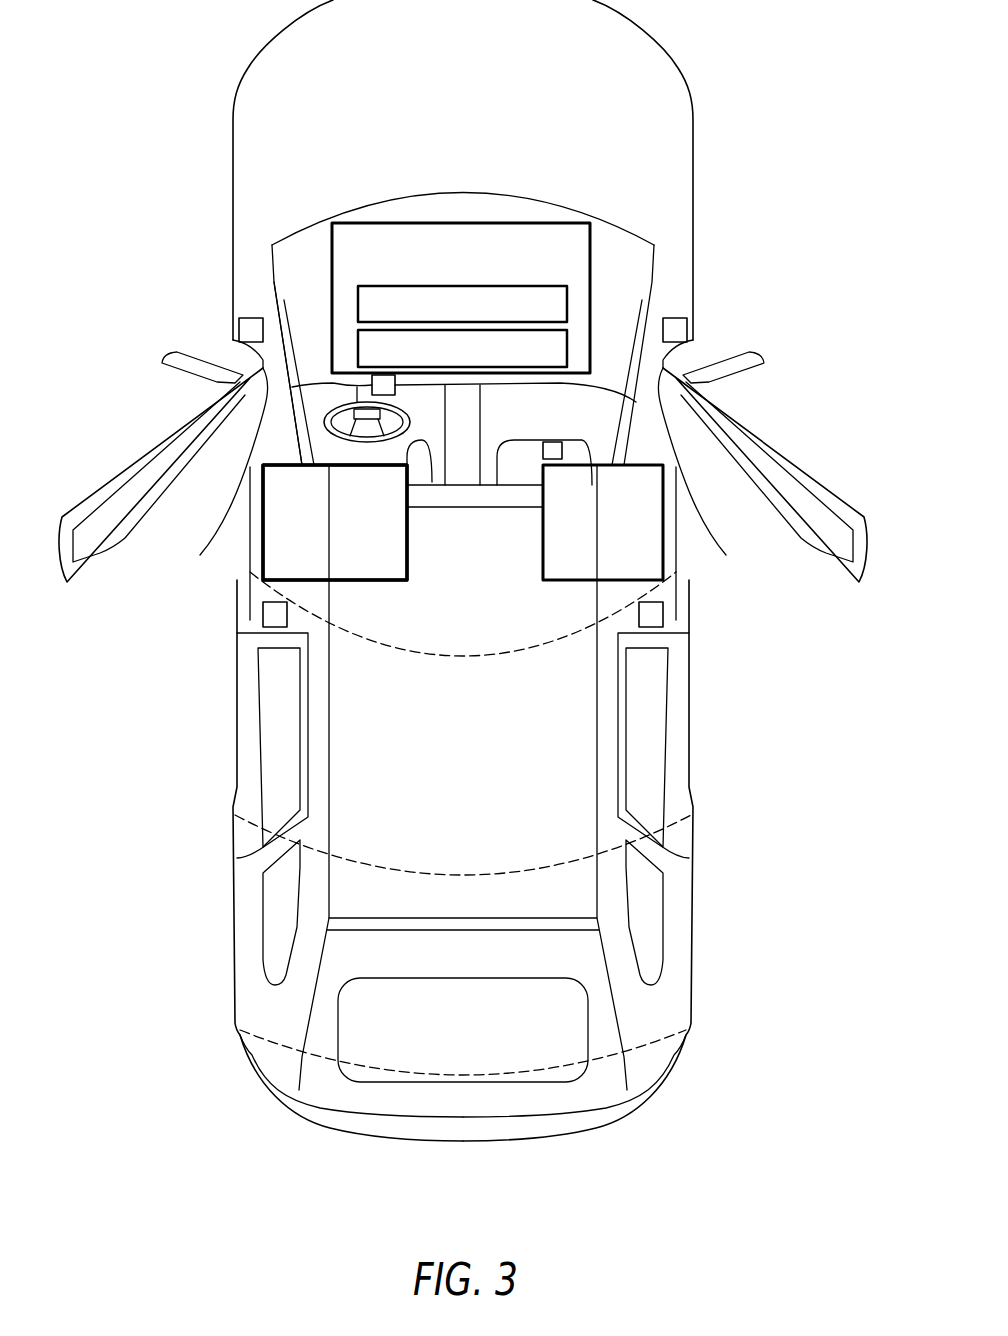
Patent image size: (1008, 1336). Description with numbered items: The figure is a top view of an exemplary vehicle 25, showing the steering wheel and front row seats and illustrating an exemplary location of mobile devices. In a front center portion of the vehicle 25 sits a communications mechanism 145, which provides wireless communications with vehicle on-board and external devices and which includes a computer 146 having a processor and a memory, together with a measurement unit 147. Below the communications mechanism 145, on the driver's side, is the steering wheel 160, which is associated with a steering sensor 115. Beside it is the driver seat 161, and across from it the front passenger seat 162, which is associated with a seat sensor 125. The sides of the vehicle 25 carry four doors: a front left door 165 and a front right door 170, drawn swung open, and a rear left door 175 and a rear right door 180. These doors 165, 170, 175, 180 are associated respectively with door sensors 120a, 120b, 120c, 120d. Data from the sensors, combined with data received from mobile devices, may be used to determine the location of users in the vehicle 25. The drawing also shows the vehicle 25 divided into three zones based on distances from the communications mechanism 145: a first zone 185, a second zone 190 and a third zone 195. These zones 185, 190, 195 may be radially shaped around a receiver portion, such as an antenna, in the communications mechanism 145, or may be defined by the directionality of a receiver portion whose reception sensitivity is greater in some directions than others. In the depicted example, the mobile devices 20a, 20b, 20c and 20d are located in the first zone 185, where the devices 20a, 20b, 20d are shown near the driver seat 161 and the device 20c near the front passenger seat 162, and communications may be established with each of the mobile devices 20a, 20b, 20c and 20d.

The vehicle 25 is at (694, 167).
The communications mechanism 145 is at (528, 223).
The computer 146 is at (590, 298).
The measurement unit 147 is at (590, 340).
The door sensor 120a is at (239, 332).
The door sensor 120b is at (687, 332).
The door sensor 120c is at (270, 617).
The door sensor 120d is at (656, 617).
The steering sensor 115 is at (396, 387).
The seat sensor 125 is at (552, 442).
The steering wheel 160 is at (332, 452).
The front left door 165 is at (120, 470).
The front right door 170 is at (806, 468).
The driver seat 161 is at (200, 555).
The front passenger seat 162 is at (726, 555).
The rear left door 175 is at (245, 718).
The rear right door 180 is at (681, 718).
The mobile device 20a is at (400, 567).
The mobile device 20b is at (335, 522).
The mobile device 20c is at (609, 573).
The mobile device 20d is at (335, 522).
The first zone 185 is at (470, 583).
The second zone 190 is at (469, 786).
The third zone 195 is at (469, 1033).